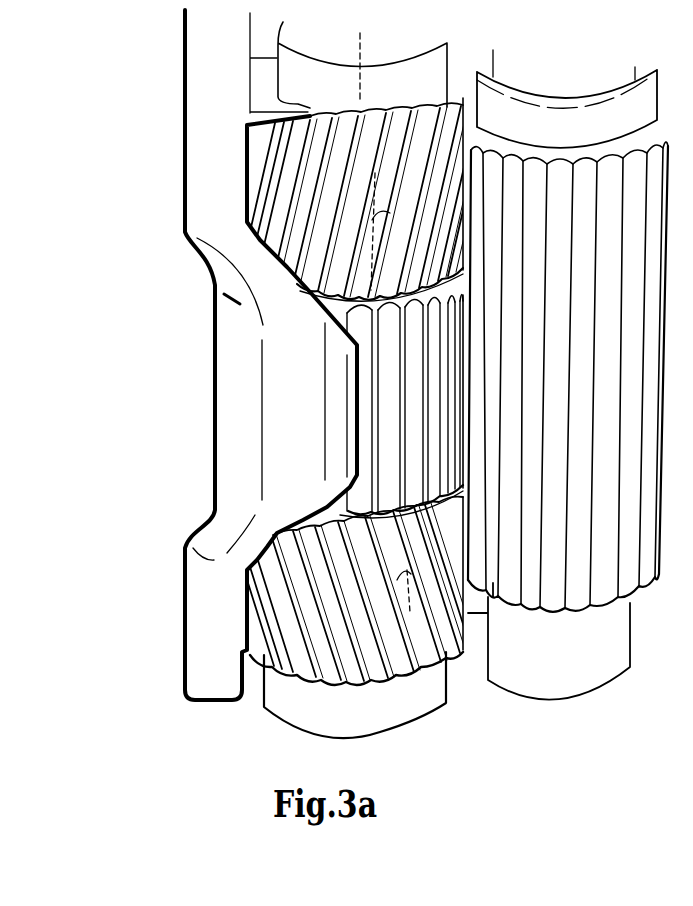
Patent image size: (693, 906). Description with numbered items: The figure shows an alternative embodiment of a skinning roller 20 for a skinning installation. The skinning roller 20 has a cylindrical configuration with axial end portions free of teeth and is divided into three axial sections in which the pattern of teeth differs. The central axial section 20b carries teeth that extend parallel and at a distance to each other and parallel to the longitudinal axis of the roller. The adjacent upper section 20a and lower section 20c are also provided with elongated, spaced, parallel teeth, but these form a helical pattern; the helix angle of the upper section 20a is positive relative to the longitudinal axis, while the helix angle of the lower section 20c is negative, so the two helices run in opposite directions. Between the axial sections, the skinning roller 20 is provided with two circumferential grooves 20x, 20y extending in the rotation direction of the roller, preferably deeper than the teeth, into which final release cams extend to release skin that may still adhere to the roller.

The skinning roller 20 is at (360, 9).
The upper section 20a is at (290, 190).
The central axial section 20b is at (387, 380).
The lower section 20c is at (313, 557).
The circumferential groove 20x is at (350, 510).
The circumferential groove 20y is at (330, 290).